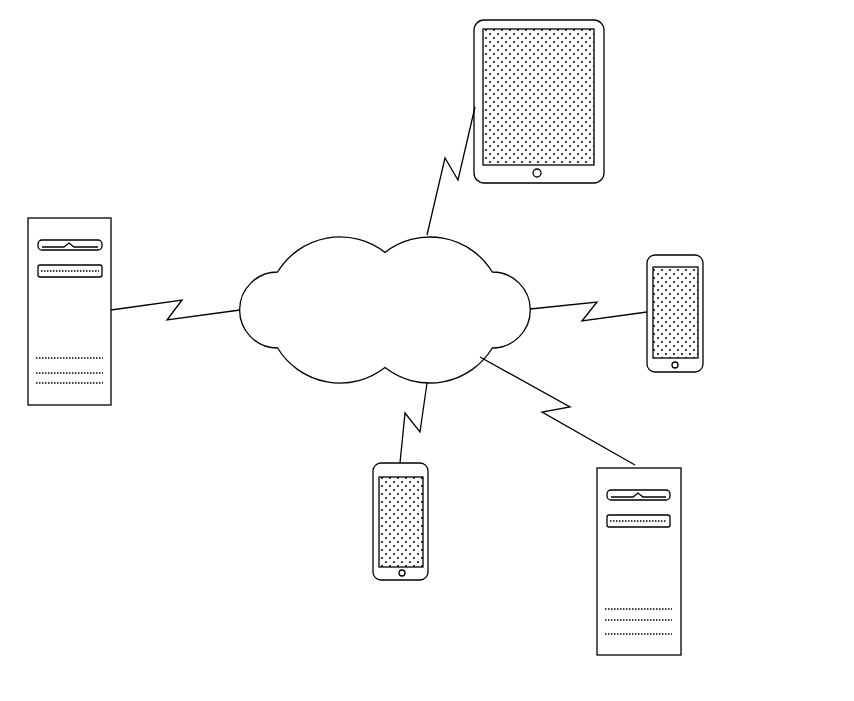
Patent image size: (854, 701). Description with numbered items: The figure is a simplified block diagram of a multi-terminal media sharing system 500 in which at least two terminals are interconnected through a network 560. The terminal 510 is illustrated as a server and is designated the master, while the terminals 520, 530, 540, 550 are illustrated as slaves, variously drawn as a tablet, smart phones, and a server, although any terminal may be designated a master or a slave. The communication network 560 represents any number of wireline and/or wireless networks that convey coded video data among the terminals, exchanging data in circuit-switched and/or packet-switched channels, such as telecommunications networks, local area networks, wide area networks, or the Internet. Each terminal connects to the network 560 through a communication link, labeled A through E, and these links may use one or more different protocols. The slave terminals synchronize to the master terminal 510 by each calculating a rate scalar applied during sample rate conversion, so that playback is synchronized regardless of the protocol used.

The multi-terminal media sharing system 500 is at (415, 353).
The terminal 510 is at (69, 337).
The terminal 520 is at (539, 117).
The terminal 530 is at (690, 328).
The terminal 540 is at (640, 577).
The terminal 550 is at (404, 537).
The network 560 is at (385, 310).